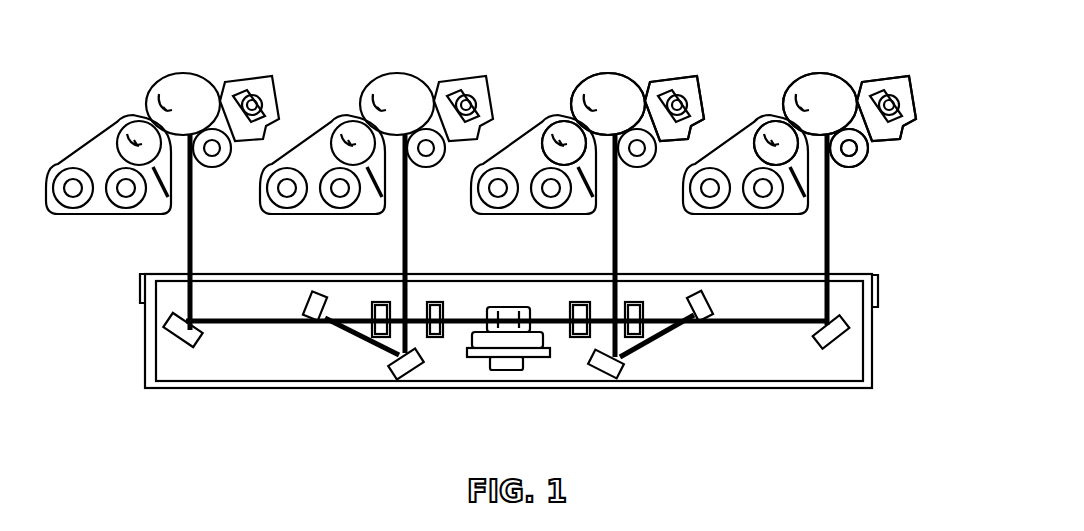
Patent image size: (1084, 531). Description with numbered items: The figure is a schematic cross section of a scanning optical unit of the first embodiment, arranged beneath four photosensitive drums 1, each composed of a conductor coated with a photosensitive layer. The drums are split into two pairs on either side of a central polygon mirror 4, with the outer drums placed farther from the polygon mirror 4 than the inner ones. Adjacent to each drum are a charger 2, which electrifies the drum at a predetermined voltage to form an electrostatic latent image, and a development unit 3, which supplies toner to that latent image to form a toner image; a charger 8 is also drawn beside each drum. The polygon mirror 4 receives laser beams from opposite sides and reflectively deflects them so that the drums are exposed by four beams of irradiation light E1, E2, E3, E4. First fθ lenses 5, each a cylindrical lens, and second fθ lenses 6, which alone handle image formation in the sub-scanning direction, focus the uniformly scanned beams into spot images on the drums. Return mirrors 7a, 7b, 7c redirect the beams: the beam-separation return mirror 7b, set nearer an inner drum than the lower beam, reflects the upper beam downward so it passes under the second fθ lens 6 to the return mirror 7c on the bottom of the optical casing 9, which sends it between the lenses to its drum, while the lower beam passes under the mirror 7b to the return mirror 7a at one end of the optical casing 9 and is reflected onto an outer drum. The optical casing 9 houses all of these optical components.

The photosensitive drum 1 is at (607, 92).
The charger 2 is at (866, 163).
The development unit 3 is at (560, 121).
The polygon mirror 4 is at (533, 353).
The first fθ lens 5 is at (574, 302).
The second fθ lens 6 is at (635, 302).
The return mirror 7a is at (846, 334).
The beam-separation return mirror 7b is at (705, 292).
The return mirror 7c is at (623, 366).
The charger 8 is at (672, 82).
The optical casing 9 is at (213, 389).
The irradiation light E1 is at (832, 205).
The irradiation light E2 is at (620, 196).
The irradiation light E3 is at (402, 228).
The irradiation light E4 is at (187, 228).